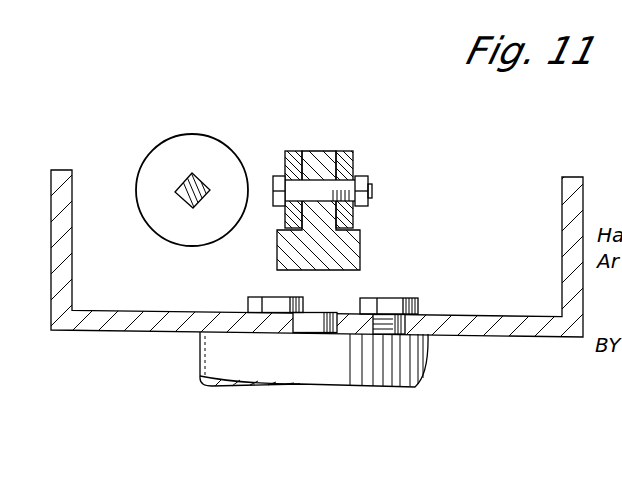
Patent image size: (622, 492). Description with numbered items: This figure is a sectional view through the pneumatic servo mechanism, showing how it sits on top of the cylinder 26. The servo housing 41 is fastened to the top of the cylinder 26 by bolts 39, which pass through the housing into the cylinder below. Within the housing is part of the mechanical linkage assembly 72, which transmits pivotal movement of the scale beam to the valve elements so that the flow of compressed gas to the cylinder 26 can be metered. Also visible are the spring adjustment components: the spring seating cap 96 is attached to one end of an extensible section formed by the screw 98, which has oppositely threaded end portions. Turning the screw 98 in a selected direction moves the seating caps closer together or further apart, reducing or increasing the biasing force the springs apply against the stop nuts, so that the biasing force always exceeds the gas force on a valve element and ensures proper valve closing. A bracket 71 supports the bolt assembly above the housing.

The cylinder 26 is at (200, 360).
The bolts 39 is at (280, 296).
The servo housing 41 is at (525, 337).
The bracket 71 is at (338, 257).
The mechanical linkage assembly 72 is at (372, 190).
The spring seating cap 96 is at (201, 143).
The screw 98 is at (183, 185).